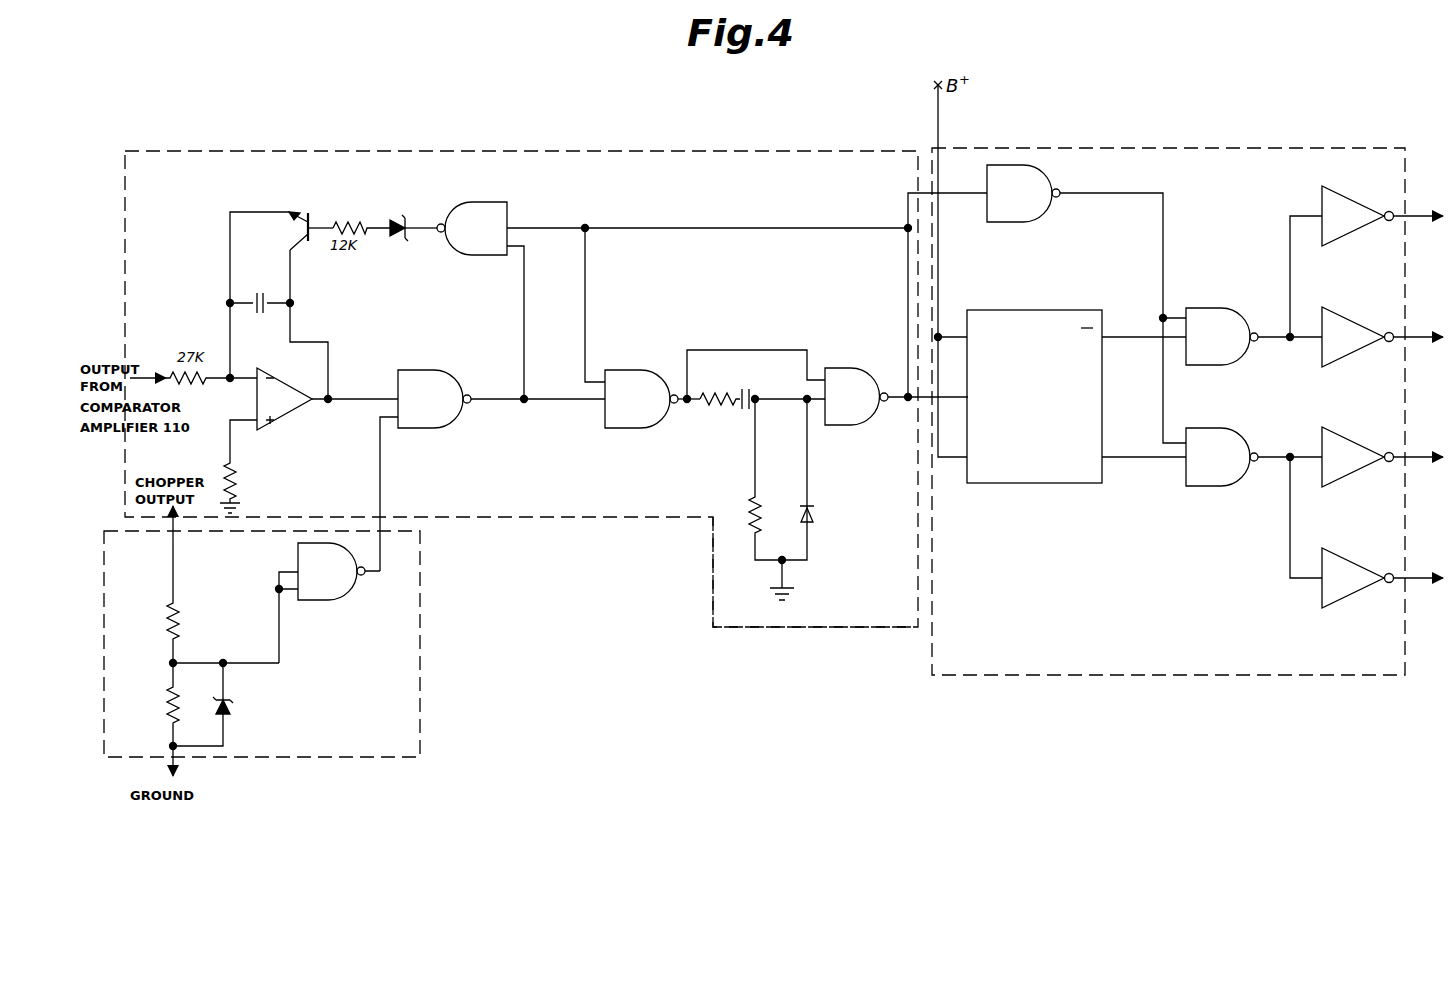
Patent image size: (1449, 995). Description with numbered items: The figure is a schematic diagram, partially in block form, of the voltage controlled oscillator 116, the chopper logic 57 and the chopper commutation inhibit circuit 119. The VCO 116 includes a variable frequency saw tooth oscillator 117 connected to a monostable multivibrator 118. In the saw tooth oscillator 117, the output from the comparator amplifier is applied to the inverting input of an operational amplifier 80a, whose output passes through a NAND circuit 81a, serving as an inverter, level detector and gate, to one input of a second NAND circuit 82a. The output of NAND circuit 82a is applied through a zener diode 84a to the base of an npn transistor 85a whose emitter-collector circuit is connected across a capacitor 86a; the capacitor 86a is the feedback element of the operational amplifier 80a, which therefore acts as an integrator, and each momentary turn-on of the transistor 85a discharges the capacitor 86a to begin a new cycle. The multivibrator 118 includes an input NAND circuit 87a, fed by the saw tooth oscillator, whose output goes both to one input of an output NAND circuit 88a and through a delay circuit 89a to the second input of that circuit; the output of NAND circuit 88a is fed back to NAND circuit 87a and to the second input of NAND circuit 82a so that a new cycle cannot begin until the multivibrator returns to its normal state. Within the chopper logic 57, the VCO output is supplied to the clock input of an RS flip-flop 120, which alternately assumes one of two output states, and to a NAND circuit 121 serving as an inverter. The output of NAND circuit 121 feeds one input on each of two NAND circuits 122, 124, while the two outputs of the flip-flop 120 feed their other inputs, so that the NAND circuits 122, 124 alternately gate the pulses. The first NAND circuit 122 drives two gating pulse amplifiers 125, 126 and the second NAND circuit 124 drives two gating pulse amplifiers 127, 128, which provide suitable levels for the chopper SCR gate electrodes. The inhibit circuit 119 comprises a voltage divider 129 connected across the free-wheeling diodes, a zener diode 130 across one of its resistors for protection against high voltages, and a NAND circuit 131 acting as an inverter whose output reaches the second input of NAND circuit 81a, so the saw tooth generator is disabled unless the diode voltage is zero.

The voltage controlled oscillator 116 is at (603, 149).
The variable frequency saw tooth oscillator 117 is at (386, 288).
The monostable multivibrator 118 is at (703, 270).
The chopper commutation inhibit circuit 119 is at (421, 651).
The chopper logic 57 is at (1170, 147).
The operational amplifier 80a is at (283, 420).
The first NAND circuit 81a is at (425, 372).
The second NAND circuit 82a is at (497, 202).
The zener diode 84a is at (396, 214).
The npn transistor 85a is at (300, 211).
The capacitor 86a is at (257, 292).
The input NAND circuit 87a is at (632, 375).
The output NAND circuit 88a is at (853, 427).
The delay circuit 89a is at (737, 413).
The RS flip-flop 120 is at (1040, 488).
The NAND circuit 121 is at (1010, 165).
The first NAND circuit 122 is at (1210, 307).
The second NAND circuit 124 is at (1210, 429).
The gating pulse amplifier 125 is at (1340, 201).
The gating pulse amplifier 126 is at (1340, 320).
The gating pulse amplifier 127 is at (1340, 438).
The gating pulse amplifier 128 is at (1338, 558).
The voltage divider 129 is at (150, 637).
The zener diode 130 is at (240, 703).
The NAND circuit 131 is at (330, 600).